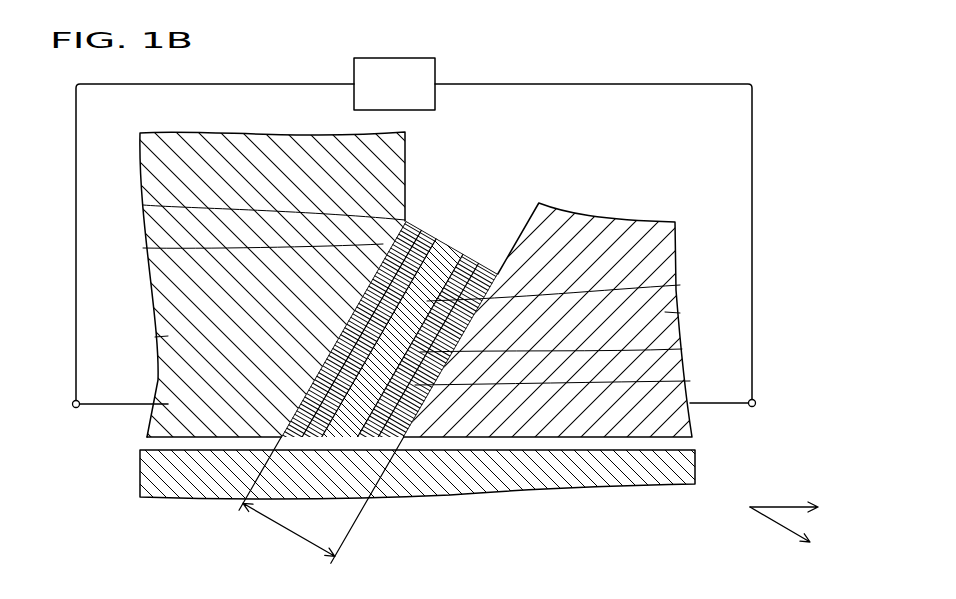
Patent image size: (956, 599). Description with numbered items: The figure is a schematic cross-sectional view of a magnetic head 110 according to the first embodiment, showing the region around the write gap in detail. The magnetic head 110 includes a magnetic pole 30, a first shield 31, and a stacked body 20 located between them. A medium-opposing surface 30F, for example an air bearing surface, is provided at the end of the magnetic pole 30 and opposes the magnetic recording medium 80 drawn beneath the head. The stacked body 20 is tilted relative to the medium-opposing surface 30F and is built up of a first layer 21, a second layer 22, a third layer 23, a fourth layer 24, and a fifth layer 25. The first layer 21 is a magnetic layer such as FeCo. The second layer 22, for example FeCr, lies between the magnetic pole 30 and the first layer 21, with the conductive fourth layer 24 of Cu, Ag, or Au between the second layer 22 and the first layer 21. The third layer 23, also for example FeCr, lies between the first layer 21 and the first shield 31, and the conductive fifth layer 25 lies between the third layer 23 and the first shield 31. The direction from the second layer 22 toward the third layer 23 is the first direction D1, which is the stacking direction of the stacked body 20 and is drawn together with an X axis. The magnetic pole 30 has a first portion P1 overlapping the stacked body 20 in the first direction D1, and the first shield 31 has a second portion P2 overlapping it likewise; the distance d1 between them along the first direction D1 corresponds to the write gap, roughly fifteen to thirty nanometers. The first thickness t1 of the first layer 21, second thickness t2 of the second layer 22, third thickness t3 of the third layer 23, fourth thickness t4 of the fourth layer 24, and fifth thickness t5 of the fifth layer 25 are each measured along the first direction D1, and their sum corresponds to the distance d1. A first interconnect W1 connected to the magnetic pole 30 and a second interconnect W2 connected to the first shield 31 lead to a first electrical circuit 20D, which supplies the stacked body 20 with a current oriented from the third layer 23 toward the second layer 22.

The magnetic head 110 is at (732, 63).
The first electrical circuit 20D is at (405, 58).
The magnetic pole 30 is at (245, 142).
The medium-opposing surface 30F is at (193, 442).
The first shield 31 is at (609, 219).
The stacked body 20 is at (405, 299).
The first layer 21 is at (585, 144).
The second layer 22 is at (346, 342).
The third layer 23 is at (403, 375).
The fourth layer 24 is at (362, 351).
The fifth layer 25 is at (420, 386).
The magnetic recording medium 80 is at (643, 487).
The distance d1 is at (321, 500).
The first interconnect W1 is at (98, 408).
The second interconnect W2 is at (733, 407).
The first thickness t1 is at (680, 285).
The second thickness t2 is at (143, 205).
The third thickness t3 is at (682, 349).
The fourth thickness t4 is at (143, 248).
The fifth thickness t5 is at (690, 381).
The first portion P1 is at (155, 337).
The second portion P2 is at (680, 313).
The X direction axis X is at (792, 507).
The first direction D1 is at (798, 532).